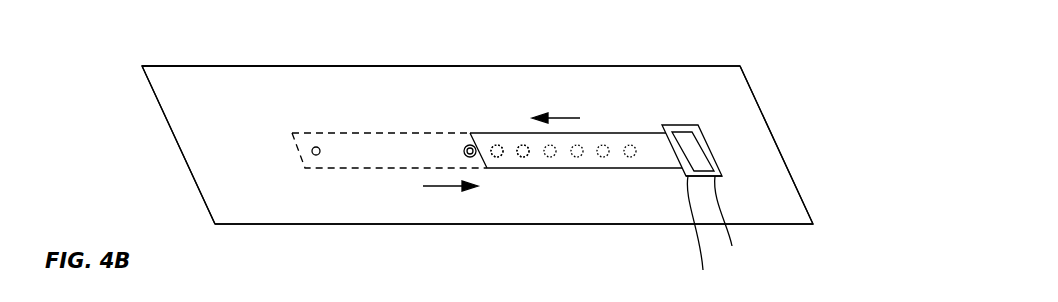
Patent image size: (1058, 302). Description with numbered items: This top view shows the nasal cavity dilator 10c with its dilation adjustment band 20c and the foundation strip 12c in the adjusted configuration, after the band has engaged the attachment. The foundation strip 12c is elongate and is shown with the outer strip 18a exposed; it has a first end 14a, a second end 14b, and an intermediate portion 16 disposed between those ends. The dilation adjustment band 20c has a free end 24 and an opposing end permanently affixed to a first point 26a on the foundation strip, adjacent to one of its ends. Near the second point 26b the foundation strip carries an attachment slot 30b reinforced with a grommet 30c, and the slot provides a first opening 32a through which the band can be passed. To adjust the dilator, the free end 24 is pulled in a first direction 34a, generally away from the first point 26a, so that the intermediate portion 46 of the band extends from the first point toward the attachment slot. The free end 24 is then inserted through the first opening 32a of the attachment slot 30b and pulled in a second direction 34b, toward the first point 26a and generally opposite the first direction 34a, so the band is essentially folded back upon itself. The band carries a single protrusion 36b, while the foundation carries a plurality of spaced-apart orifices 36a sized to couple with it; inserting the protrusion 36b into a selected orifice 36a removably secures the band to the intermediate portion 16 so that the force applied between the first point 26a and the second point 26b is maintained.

The nasal cavity dilator 10c is at (474, 244).
The foundation strip 12c is at (305, 224).
The first end 14a is at (180, 148).
The second end 14b is at (806, 202).
The intermediate portion 16 is at (464, 80).
The outer strip 18a is at (208, 86).
The dilation adjustment band 20c is at (628, 133).
The free end 24 is at (468, 146).
The first point 26a is at (312, 154).
The second point 26b is at (677, 172).
The attachment slot 30b is at (736, 224).
The grommet 30c is at (704, 235).
The first opening 32a is at (694, 155).
The first direction 34a is at (431, 187).
The second direction 34b is at (579, 119).
The orifice 36a is at (462, 152).
The protrusion 36b is at (512, 170).
The intermediate portion of the dilation adjustment band 46 is at (495, 136).